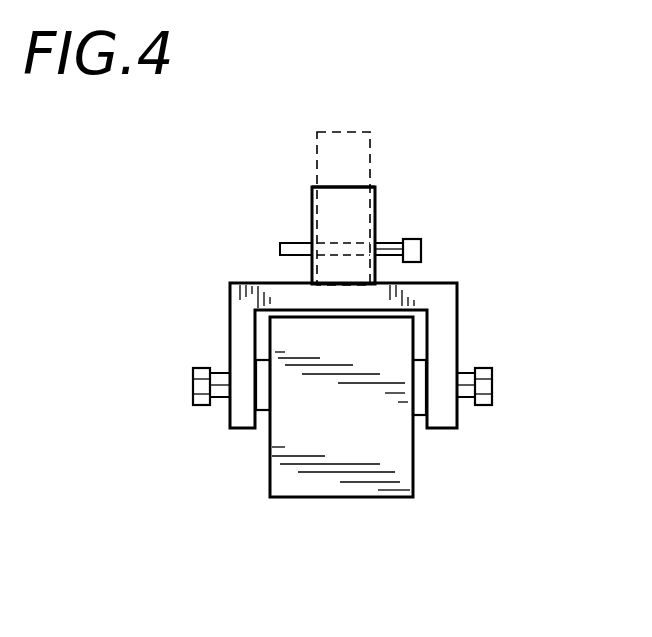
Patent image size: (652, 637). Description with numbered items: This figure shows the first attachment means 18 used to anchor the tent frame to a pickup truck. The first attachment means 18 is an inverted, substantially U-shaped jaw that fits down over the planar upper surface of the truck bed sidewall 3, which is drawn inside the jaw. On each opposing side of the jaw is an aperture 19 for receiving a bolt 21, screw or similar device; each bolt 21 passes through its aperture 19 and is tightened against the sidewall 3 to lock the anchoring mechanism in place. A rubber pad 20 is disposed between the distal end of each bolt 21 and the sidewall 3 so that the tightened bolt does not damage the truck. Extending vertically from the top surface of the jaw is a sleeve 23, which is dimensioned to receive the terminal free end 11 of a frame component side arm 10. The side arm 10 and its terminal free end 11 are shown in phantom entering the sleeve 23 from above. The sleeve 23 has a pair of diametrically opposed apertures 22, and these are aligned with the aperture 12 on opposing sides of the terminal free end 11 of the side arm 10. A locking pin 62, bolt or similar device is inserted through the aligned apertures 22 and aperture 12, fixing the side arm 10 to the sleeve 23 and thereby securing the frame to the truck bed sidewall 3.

The sidewall 3 is at (340, 463).
The side arm 10 is at (327, 160).
The terminal free end 11 is at (330, 263).
The aperture 12 is at (282, 250).
The first attachment means 18 is at (458, 325).
The aperture 19 is at (457, 400).
The rubber pad 20 is at (262, 410).
The bolt 21 is at (197, 369).
The apertures 22 is at (312, 243).
The sleeve 23 is at (376, 193).
The locking pin 62 is at (421, 242).